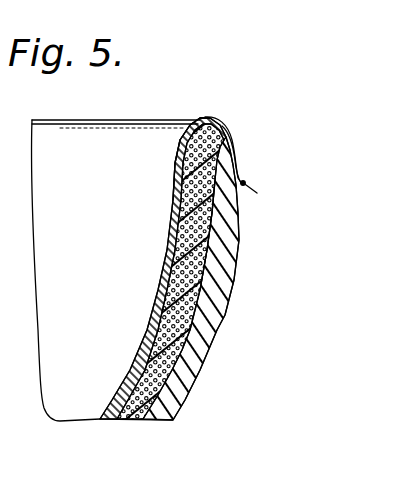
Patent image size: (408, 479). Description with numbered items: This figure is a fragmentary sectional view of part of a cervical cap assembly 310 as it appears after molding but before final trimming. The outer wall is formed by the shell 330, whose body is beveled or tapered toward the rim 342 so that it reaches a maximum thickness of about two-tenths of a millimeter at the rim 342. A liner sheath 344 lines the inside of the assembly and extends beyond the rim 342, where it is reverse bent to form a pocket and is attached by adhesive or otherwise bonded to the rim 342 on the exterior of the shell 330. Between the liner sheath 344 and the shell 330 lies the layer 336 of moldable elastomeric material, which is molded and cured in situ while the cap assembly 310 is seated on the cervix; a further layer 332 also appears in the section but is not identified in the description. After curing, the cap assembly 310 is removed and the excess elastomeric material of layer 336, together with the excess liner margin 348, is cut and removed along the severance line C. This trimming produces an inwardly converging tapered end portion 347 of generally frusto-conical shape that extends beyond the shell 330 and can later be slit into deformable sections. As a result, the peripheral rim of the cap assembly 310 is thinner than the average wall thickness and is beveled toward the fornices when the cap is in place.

The cervical cap assembly 310 is at (268, 378).
The shell 330 is at (215, 323).
The foam layer 332 is at (200, 278).
The layer of moldable material 336 is at (214, 232).
The rim 342 is at (233, 155).
The liner sheath 344 is at (150, 316).
The tapered end portion 347 is at (190, 137).
The liner margin 348 is at (190, 133).
The severance line C is at (193, 127).